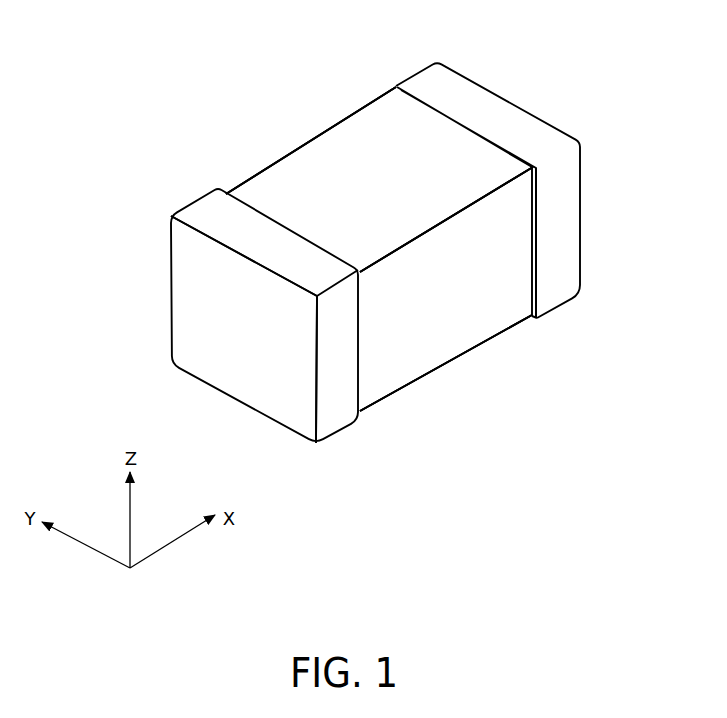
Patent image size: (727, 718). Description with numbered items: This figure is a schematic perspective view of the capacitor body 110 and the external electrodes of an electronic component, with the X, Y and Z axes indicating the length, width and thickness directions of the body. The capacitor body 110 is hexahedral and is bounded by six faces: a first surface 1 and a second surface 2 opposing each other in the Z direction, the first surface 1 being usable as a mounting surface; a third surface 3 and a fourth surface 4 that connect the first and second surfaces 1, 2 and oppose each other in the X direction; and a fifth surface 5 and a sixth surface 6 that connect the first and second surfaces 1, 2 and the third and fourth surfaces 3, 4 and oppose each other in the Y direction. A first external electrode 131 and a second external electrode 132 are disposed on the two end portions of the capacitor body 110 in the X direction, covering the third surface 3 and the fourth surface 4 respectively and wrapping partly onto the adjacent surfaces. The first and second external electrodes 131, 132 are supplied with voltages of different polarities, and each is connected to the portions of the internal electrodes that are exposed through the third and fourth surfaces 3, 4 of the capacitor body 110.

The first surface 1 is at (378, 355).
The second surface 2 is at (388, 140).
The third surface 3 is at (187, 329).
The fourth surface 4 is at (563, 202).
The fifth surface 5 is at (332, 172).
The sixth surface 6 is at (437, 320).
The capacitor body 110 is at (452, 148).
The first external electrode 131 is at (172, 278).
The second external electrode 132 is at (577, 238).